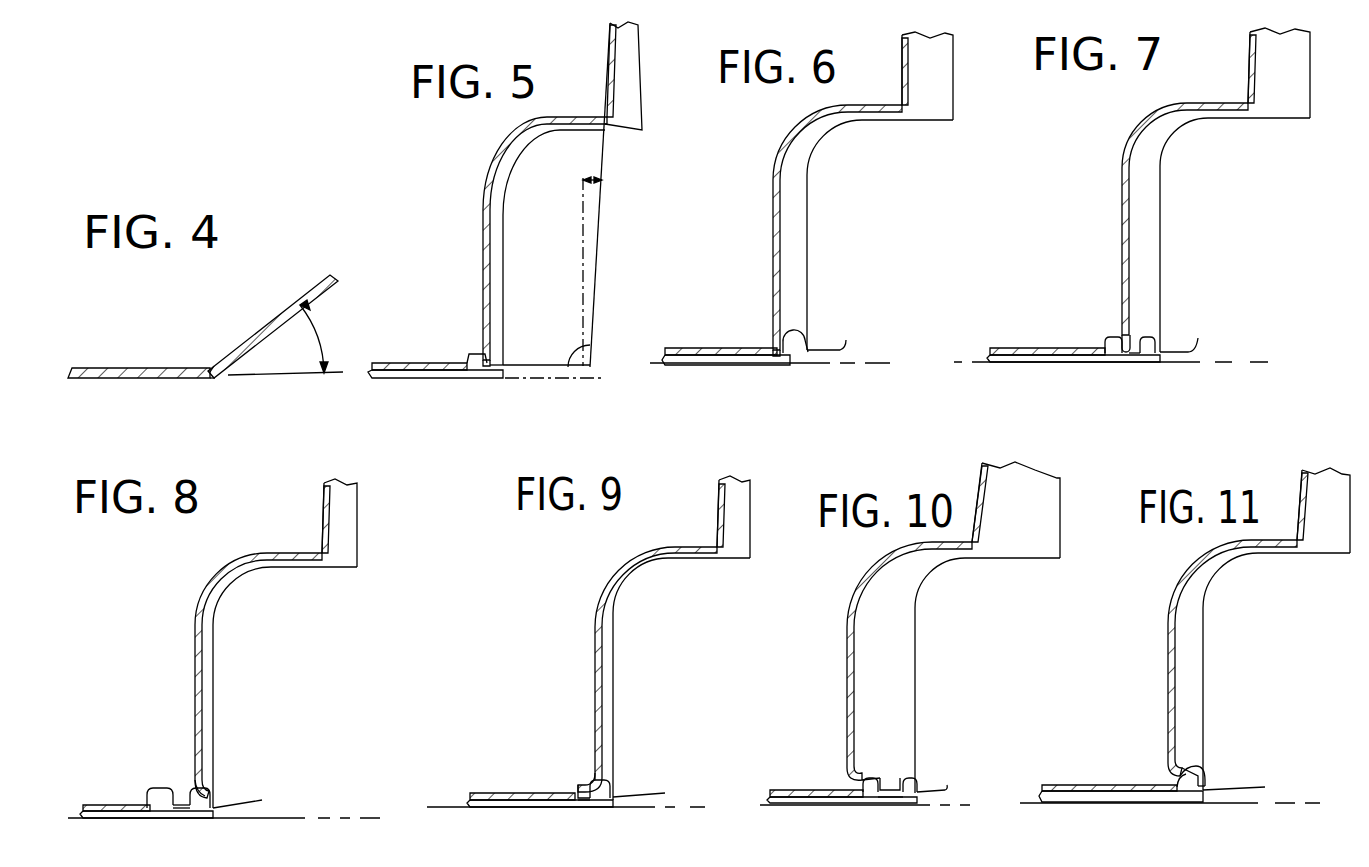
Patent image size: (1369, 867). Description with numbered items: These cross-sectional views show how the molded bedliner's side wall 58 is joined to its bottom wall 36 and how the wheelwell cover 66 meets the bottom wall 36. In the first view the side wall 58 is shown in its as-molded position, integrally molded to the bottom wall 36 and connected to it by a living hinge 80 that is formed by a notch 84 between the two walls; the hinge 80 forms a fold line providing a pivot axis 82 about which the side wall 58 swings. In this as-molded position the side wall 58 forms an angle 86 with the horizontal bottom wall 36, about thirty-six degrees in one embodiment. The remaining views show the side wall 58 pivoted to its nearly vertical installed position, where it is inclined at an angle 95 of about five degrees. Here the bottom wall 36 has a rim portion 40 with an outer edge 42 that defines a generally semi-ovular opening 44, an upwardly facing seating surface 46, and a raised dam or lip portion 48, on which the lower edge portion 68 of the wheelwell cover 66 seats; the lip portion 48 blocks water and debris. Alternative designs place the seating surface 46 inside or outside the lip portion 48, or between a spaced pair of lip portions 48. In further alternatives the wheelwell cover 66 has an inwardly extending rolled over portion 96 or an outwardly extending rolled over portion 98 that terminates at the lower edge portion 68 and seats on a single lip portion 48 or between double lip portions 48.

In FIG. 4, the bottom wall 36 is at (120, 367).
In FIG. 5, the bottom wall 36 is at (435, 362).
In FIG. 6, the bottom wall 36 is at (698, 347).
In FIG. 7, the bottom wall 36 is at (1030, 348).
In FIG. 8, the bottom wall 36 is at (110, 803).
In FIG. 9, the bottom wall 36 is at (517, 792).
In FIG. 10, the bottom wall 36 is at (802, 787).
In FIG. 11, the bottom wall 36 is at (1102, 783).
In FIG. 5, the rim portion 40 is at (488, 378).
In FIG. 5, the outer edge 42 is at (503, 363).
In FIG. 6, the outer edge 42 is at (840, 348).
In FIG. 7, the outer edge 42 is at (1197, 337).
In FIG. 8, the outer edge 42 is at (245, 800).
In FIG. 9, the outer edge 42 is at (650, 797).
In FIG. 10, the outer edge 42 is at (937, 787).
In FIG. 11, the outer edge 42 is at (1250, 785).
In FIG. 5, the semi-ovular opening 44 is at (590, 340).
In FIG. 5, the seating surface 46 is at (492, 352).
In FIG. 6, the seating surface 46 is at (777, 342).
In FIG. 7, the seating surface 46 is at (1125, 335).
In FIG. 8, the seating surface 46 is at (175, 792).
In FIG. 9, the seating surface 46 is at (577, 780).
In FIG. 10, the seating surface 46 is at (887, 778).
In FIG. 5, the lip portion 48 is at (477, 352).
In FIG. 6, the lip portion 48 is at (798, 328).
In FIG. 7, the lip portion 48 is at (1112, 335).
In FIG. 8, the lip portion 48 is at (158, 790).
In FIG. 9, the lip portion 48 is at (612, 785).
In FIG. 10, the lip portion 48 is at (863, 782).
In FIG. 11, the lip portion 48 is at (1178, 780).
In FIG. 4, the side wall 58 is at (318, 278).
In FIG. 5, the side wall 58 is at (607, 67).
In FIG. 6, the side wall 58 is at (898, 63).
In FIG. 7, the side wall 58 is at (1250, 63).
In FIG. 8, the side wall 58 is at (317, 513).
In FIG. 9, the side wall 58 is at (713, 507).
In FIG. 10, the side wall 58 is at (973, 490).
In FIG. 11, the side wall 58 is at (1297, 493).
In FIG. 5, the wheelwell cover 66 is at (497, 155).
In FIG. 6, the wheelwell cover 66 is at (797, 127).
In FIG. 7, the wheelwell cover 66 is at (1163, 117).
In FIG. 8, the wheelwell cover 66 is at (223, 570).
In FIG. 9, the wheelwell cover 66 is at (627, 563).
In FIG. 10, the wheelwell cover 66 is at (863, 578).
In FIG. 11, the wheelwell cover 66 is at (1183, 572).
In FIG. 5, the lower edge portion 68 is at (495, 377).
In FIG. 6, the lower edge portion 68 is at (783, 357).
In FIG. 7, the lower edge portion 68 is at (1137, 335).
In FIG. 8, the lower edge portion 68 is at (177, 807).
In FIG. 9, the lower edge portion 68 is at (580, 797).
In FIG. 10, the lower edge portion 68 is at (888, 798).
In FIG. 11, the lower edge portion 68 is at (1205, 773).
In FIG. 4, the hinge 80 is at (197, 353).
In FIG. 4, the pivot axis 82 is at (213, 373).
In FIG. 4, the notch 84 is at (212, 365).
In FIG. 4, the angle 86 is at (337, 330).
In FIG. 5, the angle 95 is at (590, 177).
In FIG. 8, the rolled over portion 96 is at (193, 772).
In FIG. 9, the rolled over portion 96 is at (600, 775).
In FIG. 10, the rolled over portion 98 is at (873, 770).
In FIG. 11, the rolled over portion 98 is at (1197, 765).